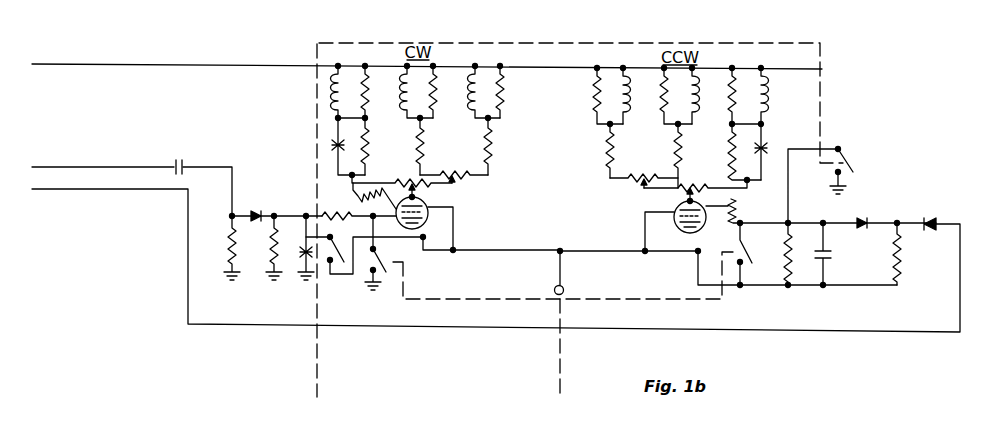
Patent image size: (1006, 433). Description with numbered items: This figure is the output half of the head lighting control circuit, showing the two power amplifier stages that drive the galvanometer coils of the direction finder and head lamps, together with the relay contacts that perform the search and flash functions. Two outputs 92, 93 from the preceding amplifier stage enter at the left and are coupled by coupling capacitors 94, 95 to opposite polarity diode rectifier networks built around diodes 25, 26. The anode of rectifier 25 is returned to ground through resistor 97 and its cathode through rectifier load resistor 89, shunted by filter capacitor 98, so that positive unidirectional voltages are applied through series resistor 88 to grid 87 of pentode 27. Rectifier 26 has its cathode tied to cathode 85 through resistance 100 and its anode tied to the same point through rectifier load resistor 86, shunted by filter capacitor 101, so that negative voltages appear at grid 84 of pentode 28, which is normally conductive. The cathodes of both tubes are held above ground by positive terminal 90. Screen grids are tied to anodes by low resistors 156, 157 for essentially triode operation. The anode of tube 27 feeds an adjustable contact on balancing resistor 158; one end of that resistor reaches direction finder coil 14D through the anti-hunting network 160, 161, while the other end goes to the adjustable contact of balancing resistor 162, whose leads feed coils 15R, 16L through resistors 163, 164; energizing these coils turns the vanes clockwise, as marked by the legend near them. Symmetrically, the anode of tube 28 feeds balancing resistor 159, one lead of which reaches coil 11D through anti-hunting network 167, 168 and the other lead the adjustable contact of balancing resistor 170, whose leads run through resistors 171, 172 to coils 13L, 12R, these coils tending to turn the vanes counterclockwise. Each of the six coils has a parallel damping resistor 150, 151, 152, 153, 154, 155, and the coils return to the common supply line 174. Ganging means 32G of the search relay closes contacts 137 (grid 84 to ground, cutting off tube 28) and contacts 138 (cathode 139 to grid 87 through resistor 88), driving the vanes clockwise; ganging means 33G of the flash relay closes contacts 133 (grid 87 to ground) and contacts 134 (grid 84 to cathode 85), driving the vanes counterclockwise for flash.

The supply line 174 is at (70, 65).
The output of amplifier stage 92 is at (58, 168).
The output of amplifier stage 93 is at (55, 190).
The coupling capacitor 94 is at (186, 166).
The resistor 97 is at (226, 242).
The diode rectifier 25 is at (257, 208).
The series resistor 88 is at (331, 208).
The shunt filter capacitor 98 is at (305, 245).
The rectifier load resistor 89 is at (282, 258).
The contacts 138 is at (332, 264).
The contacts 133 is at (388, 272).
The cathode of tube 27 139 is at (410, 224).
The grid of tube 27 87 is at (428, 216).
The pentode power amplifier tube 27 is at (424, 203).
The low resistor 156 is at (356, 198).
The anti-hunting network element 160 is at (330, 143).
The direction finder galvanometer coil 14D is at (336, 90).
The right head lamp galvanometer coil 15R is at (398, 97).
The left head lamp galvanometer coil 16L is at (471, 95).
The resistor 163 is at (414, 134).
The anti-hunting network element 161 is at (371, 150).
The balancing resistor 158 is at (402, 172).
The balancing resistor 162 is at (455, 170).
The resistor 164 is at (496, 130).
The damping resistor 150 is at (370, 88).
The damping resistor 151 is at (437, 88).
The damping resistor 152 is at (504, 88).
The damping resistor 153 is at (601, 88).
The left head lamp galvanometer coil 13L is at (631, 95).
The damping resistor 154 is at (668, 88).
The damping resistor 155 is at (736, 88).
The direction finder galvanometer coil 11D is at (765, 95).
The anti-hunting network element 167 is at (738, 140).
The anti-hunting network element 168 is at (766, 148).
The resistor 172 is at (674, 138).
The right head lamp galvanometer coil 12R is at (708, 101).
The resistor 171 is at (604, 160).
The balancing resistor 170 is at (643, 170).
The balancing resistor 159 is at (692, 186).
The low resistor 157 is at (744, 210).
The pentode power amplifier tube 28 is at (676, 203).
The grid of tube 28 84 is at (676, 220).
The cathode of tube 28 85 is at (688, 232).
The positive terminal 90 is at (563, 288).
The contacts 134 is at (752, 268).
The rectifier load resistor 86 is at (776, 262).
The filter capacitor 101 is at (822, 262).
The resistance 100 is at (903, 255).
The diode rectifier 26 is at (864, 233).
The coupling capacitor 95 is at (936, 224).
The contacts 137 is at (853, 175).
The ganging means of search relay 32G is at (318, 348).
The ganging means of flash relay 33G is at (560, 350).